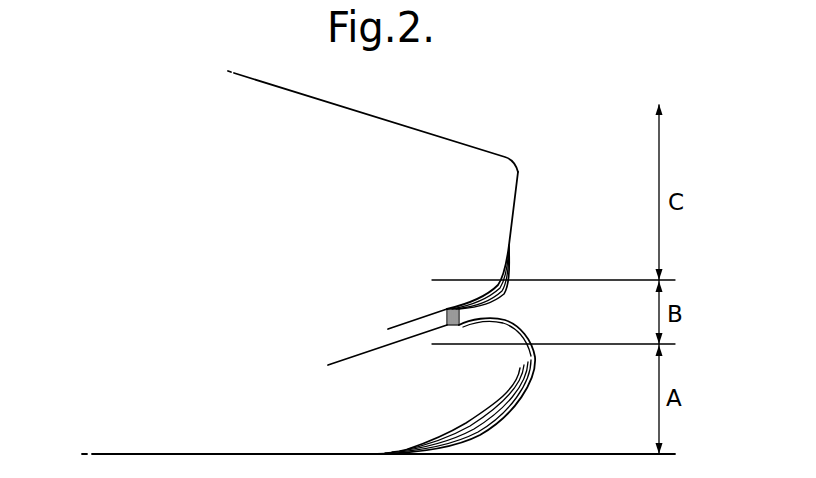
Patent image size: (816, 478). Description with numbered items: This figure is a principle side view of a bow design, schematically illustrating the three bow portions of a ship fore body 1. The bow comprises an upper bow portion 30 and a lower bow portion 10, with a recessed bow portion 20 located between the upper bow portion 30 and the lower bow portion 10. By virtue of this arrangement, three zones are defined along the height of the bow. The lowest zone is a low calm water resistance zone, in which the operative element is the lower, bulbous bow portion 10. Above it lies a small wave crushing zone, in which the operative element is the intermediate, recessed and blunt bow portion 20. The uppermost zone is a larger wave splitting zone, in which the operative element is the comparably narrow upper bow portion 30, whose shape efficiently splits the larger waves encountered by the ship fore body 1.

The ship fore body 1 is at (226, 265).
The lower bow portion 10 is at (479, 387).
The recessed bow portion 20 is at (468, 312).
The upper bow portion 30 is at (492, 233).